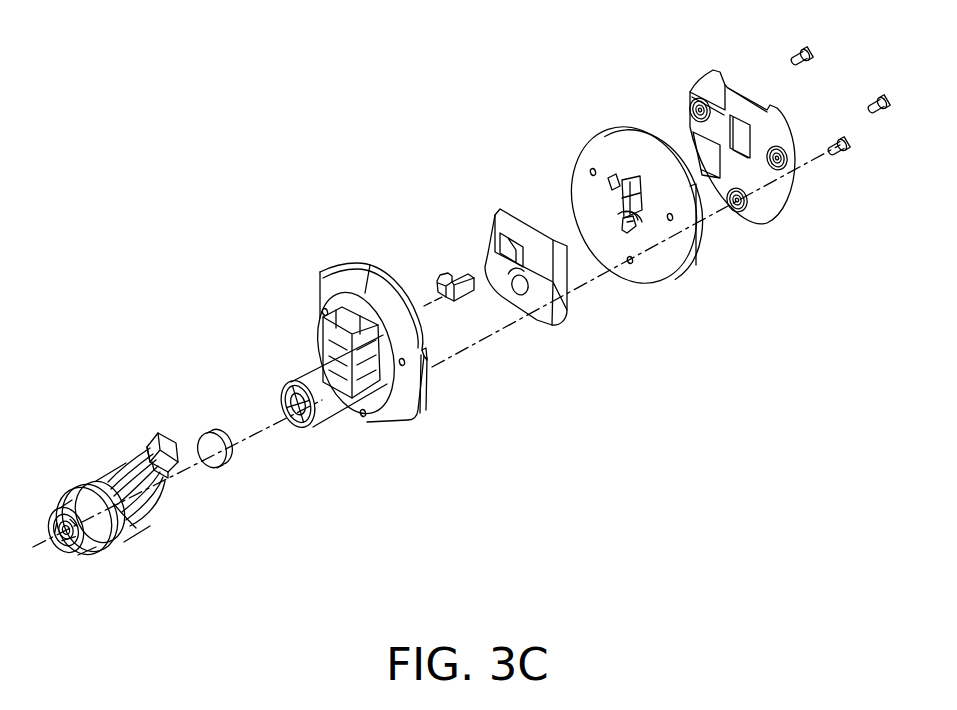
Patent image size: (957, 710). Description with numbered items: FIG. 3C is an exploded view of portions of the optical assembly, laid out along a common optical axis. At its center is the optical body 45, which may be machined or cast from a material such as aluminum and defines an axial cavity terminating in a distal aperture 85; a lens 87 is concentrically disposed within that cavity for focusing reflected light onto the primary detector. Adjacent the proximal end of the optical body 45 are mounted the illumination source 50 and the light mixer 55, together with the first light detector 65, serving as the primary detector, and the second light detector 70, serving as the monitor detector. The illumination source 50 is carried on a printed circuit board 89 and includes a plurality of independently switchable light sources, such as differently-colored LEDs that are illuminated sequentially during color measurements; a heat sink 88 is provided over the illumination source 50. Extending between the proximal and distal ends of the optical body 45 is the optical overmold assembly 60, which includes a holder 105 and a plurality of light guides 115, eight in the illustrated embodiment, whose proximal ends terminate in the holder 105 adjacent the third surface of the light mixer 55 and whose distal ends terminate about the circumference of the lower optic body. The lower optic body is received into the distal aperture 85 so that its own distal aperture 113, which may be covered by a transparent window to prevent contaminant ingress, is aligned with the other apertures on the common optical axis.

The optical body 45 is at (310, 365).
The illumination source 50 is at (633, 180).
The light mixer 55 is at (446, 275).
The optical overmold assembly 60 is at (95, 487).
The first light detector 65 is at (637, 230).
The second light detector 70 is at (585, 152).
The distal aperture 85 is at (290, 420).
The lens 87 is at (207, 432).
The heat sink 88 is at (712, 88).
The printed circuit board 89 is at (588, 185).
The holder 105 is at (173, 462).
The distal aperture 113 is at (70, 550).
The light guide 115 is at (117, 475).